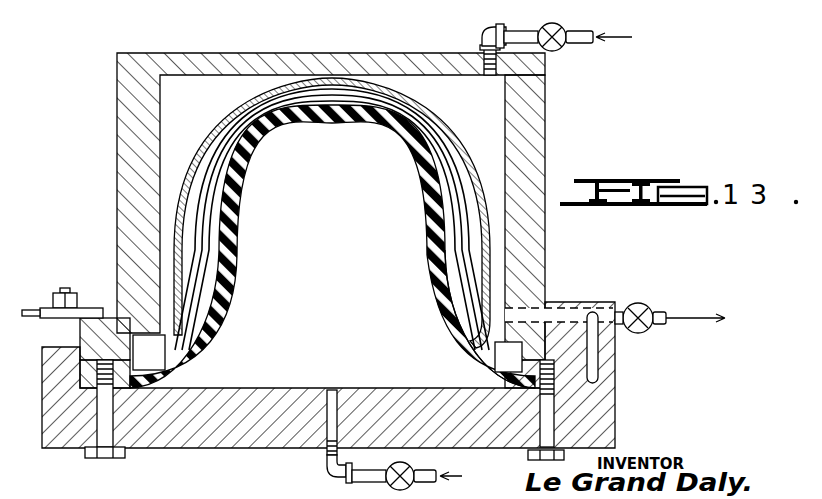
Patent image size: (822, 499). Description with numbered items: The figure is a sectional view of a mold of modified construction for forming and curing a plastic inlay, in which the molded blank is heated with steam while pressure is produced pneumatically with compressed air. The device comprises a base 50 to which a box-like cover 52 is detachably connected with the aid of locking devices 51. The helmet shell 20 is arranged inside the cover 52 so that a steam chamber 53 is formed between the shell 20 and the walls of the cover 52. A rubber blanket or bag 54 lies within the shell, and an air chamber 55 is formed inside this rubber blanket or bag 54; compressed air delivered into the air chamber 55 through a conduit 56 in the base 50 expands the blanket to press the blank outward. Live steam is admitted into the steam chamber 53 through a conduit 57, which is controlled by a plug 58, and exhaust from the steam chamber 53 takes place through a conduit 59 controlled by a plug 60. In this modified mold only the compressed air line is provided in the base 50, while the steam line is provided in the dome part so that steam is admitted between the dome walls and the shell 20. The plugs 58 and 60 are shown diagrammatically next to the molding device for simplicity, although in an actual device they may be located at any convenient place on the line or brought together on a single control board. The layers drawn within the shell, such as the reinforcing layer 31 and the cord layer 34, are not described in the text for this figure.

The helmet shell 20 is at (241, 112).
The diaphragm body 31 is at (238, 137).
The cord reinforcing layer 34 is at (200, 222).
The base 50 is at (603, 405).
The locking devices 51 is at (65, 293).
The cover 52 is at (117, 105).
The steam chamber 53 is at (495, 116).
The rubber blanket or bag 54 is at (440, 322).
The air chamber 55 is at (363, 211).
The conduit 56 is at (326, 476).
The conduit 57 is at (588, 30).
The plug 58 is at (547, 23).
The conduit 59 is at (664, 311).
The plug 60 is at (634, 304).